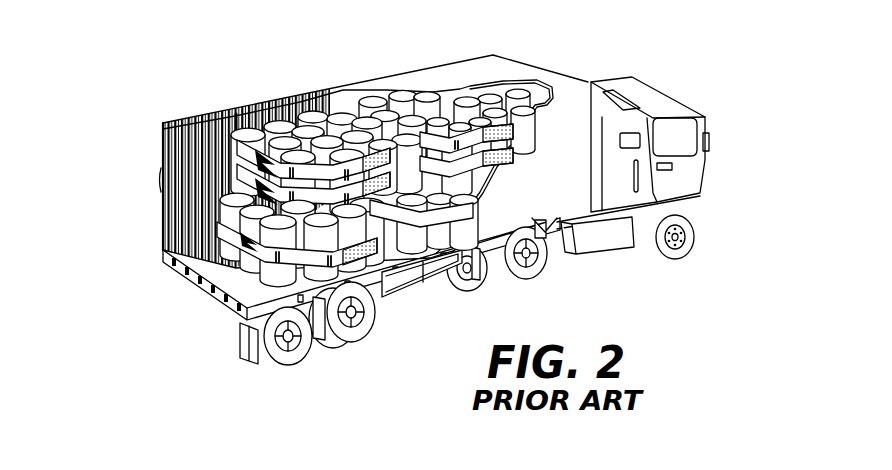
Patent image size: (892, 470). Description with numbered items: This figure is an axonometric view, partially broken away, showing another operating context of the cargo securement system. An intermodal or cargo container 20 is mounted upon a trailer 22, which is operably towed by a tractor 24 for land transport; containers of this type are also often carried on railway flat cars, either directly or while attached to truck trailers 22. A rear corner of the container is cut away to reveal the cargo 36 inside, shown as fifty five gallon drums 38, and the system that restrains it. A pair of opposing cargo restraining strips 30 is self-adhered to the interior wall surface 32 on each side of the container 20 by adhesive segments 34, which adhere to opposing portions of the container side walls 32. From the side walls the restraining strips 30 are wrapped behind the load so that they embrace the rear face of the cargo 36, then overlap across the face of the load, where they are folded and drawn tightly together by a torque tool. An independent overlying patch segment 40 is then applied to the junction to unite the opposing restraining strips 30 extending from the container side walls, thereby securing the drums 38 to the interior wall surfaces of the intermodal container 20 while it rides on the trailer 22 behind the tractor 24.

The intermodal cargo container 20 is at (435, 185).
The trailer 22 is at (402, 210).
The tractor 24 is at (703, 193).
The cargo restraining strip 30 is at (368, 298).
The interior wall surface 32 is at (349, 161).
The adhesive segment 34 is at (458, 215).
The cargo 36 is at (255, 281).
The fifty five gallon drum 38 is at (392, 188).
The overlying patch segment 40 is at (244, 140).